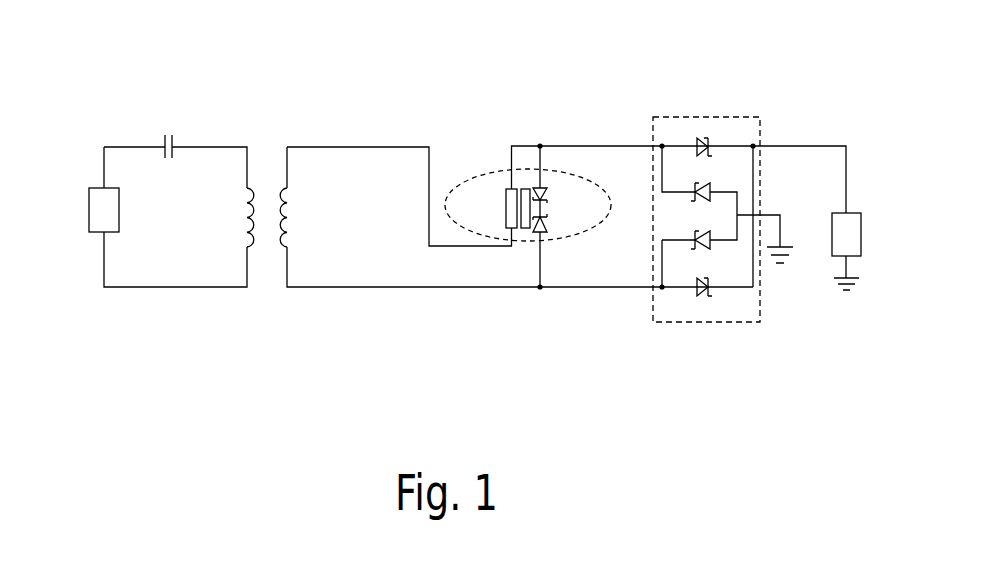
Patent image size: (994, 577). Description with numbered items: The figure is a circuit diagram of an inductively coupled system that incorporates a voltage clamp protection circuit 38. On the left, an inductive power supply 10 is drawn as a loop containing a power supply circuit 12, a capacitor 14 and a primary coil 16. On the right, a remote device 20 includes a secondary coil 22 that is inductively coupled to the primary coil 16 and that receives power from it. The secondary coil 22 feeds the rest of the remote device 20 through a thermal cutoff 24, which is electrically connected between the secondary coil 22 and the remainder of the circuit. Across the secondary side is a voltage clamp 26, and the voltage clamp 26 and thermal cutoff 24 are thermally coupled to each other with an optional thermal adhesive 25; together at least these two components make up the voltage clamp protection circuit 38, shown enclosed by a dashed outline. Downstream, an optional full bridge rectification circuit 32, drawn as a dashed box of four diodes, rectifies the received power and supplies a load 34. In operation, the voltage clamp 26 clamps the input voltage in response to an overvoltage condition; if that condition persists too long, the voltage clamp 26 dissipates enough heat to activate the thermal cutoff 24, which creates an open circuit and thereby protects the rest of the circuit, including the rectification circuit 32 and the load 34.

The inductive power supply 10 is at (118, 116).
The power supply circuit 12 is at (89, 204).
The capacitor 14 is at (174, 146).
The primary coil 16 is at (247, 216).
The remote device 20 is at (447, 92).
The secondary coil 22 is at (284, 209).
The thermal cutoff 24 is at (506, 198).
The thermal adhesive 25 is at (526, 228).
The voltage clamp 26 is at (547, 223).
The rectification circuit 32 is at (693, 117).
The load 34 is at (850, 226).
The voltage clamp protection circuit 38 is at (505, 170).